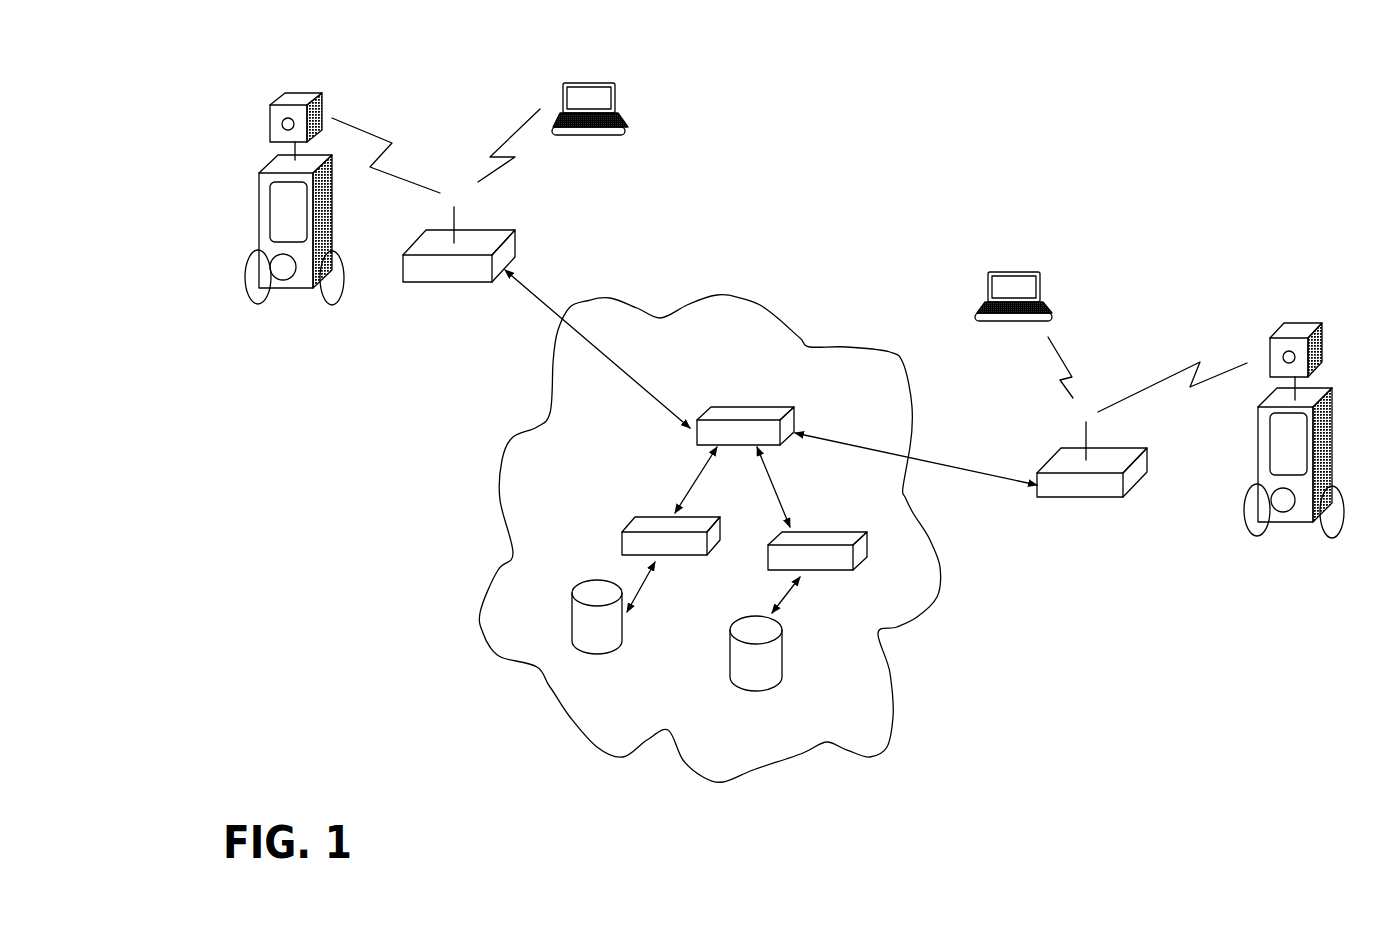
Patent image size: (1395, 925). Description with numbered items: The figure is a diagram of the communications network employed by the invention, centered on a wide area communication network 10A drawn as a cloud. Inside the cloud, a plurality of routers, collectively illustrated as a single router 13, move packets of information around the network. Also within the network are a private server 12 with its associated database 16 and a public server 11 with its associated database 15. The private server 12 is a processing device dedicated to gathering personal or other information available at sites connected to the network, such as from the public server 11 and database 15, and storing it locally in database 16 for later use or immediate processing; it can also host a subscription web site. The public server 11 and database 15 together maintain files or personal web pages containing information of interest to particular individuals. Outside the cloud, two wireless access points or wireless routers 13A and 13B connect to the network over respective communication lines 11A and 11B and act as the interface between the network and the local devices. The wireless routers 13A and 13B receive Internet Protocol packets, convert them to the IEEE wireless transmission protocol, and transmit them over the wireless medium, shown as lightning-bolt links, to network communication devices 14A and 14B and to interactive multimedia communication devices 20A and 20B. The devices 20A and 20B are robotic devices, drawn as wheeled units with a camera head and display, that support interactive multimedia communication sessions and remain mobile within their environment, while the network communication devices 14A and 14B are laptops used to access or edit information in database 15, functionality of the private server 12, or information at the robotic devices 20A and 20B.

The wide area communication network 10A is at (783, 320).
The public server 11 is at (870, 543).
The communication line 11A is at (928, 460).
The communication line 11B is at (623, 372).
The private server 12 is at (665, 558).
The router 13 is at (783, 404).
The wireless router 13A is at (1050, 500).
The wireless router 13B is at (480, 285).
The network communication device 14A is at (1040, 300).
The network communication device 14B is at (615, 110).
The database 15 is at (782, 665).
The database 16 is at (572, 618).
The interactive multimedia communication device 20A is at (1317, 368).
The interactive multimedia communication device 20B is at (270, 129).